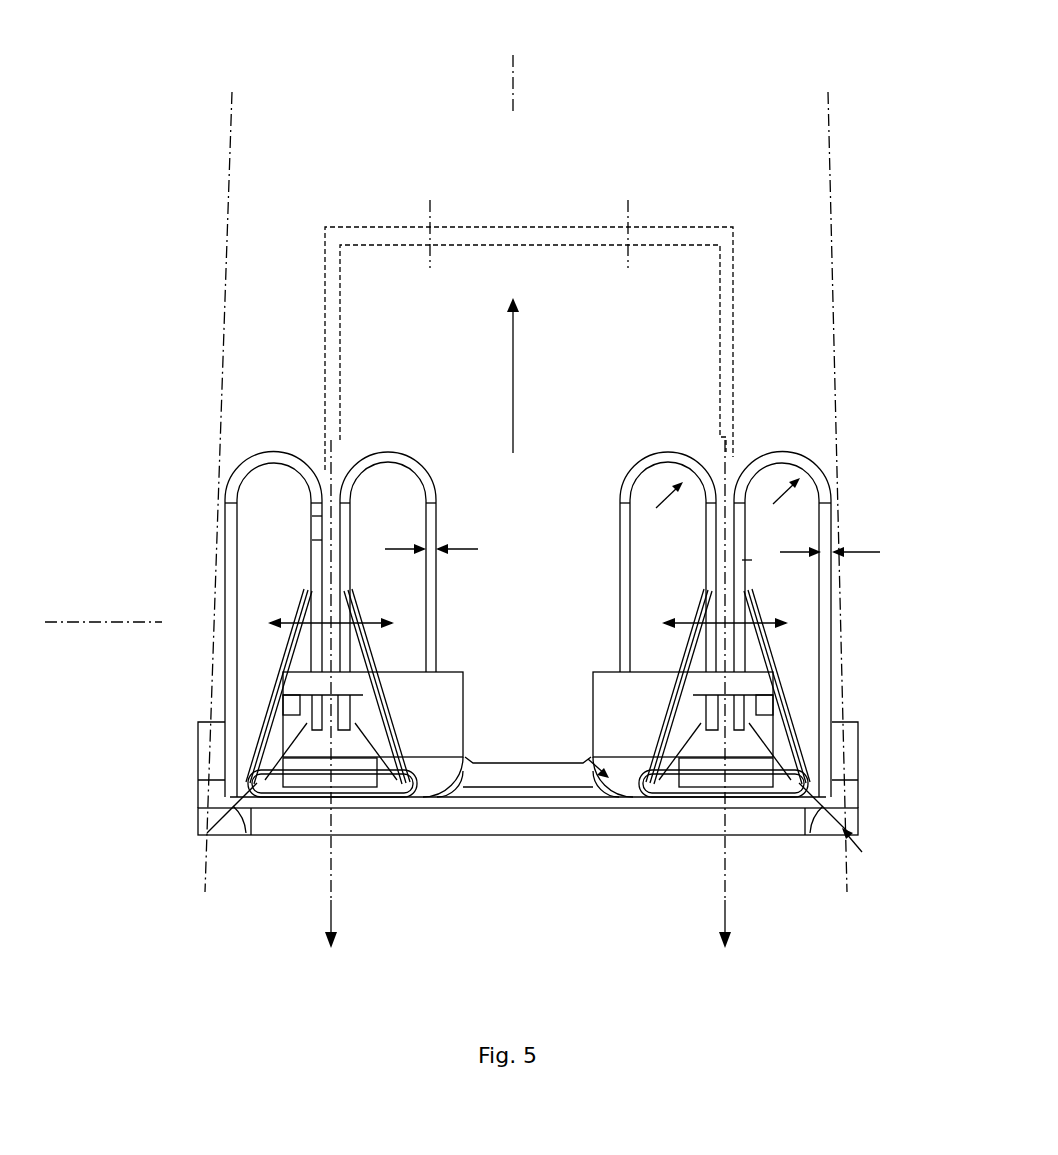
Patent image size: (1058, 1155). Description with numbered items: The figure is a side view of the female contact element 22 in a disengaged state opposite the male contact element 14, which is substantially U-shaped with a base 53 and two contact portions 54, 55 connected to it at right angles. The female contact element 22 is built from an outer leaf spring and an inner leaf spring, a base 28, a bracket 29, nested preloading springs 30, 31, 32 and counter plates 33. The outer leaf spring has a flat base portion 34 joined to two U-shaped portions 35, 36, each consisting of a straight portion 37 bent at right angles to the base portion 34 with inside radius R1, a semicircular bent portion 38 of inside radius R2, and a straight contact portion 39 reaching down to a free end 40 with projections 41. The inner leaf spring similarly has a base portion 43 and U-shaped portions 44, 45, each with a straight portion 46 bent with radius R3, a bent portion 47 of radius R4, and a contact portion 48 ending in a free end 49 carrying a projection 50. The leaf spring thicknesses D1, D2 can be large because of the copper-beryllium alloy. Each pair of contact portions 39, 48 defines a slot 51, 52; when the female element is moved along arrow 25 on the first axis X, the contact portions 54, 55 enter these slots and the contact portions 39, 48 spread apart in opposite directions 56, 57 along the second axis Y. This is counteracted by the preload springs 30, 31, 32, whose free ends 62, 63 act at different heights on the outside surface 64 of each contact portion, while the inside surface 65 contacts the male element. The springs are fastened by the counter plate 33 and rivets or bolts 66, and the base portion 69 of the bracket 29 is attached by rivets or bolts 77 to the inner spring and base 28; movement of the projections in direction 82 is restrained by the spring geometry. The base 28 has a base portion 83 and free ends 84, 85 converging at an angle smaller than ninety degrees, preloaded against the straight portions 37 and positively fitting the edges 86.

The male contact element 14 is at (283, 172).
The female contact element 22 is at (178, 410).
The arrow 25 is at (513, 380).
The base 28 is at (578, 848).
The bracket 29 is at (496, 752).
The preloading spring 30 is at (232, 834).
The preloading spring 31 is at (233, 790).
The preloading spring 32 is at (226, 722).
The counter plate 33 is at (335, 775).
The base portion 34 is at (628, 802).
The U-shaped portion 35 is at (212, 548).
The U-shaped portion 36 is at (846, 610).
The straight portion 37 is at (225, 632).
The bent portion 38 is at (280, 452).
The contact portion 39 is at (322, 540).
The free end 40 is at (283, 690).
The projection 41 is at (312, 792).
The base portion 43 is at (498, 790).
The U-shaped portion 44 is at (413, 450).
The U-shaped portion 45 is at (642, 452).
The straight portion 46 is at (436, 600).
The bent portion 47 is at (336, 450).
The contact portion 48 is at (350, 546).
The free end 49 is at (363, 695).
The projection 50 is at (342, 780).
The slot 51 is at (298, 432).
The slot 52 is at (735, 455).
The base 53 is at (520, 227).
The contact portion 54 is at (325, 290).
The contact portion 55 is at (735, 255).
The direction 56 is at (272, 622).
The direction 57 is at (392, 622).
The free end 62 is at (315, 612).
The free end 63 is at (348, 612).
The outside surface 64 is at (322, 516).
The inside surface 65 is at (331, 478).
The rivets or bolts 66 is at (331, 870).
The base portion 69 is at (532, 805).
The rivets or bolts 77 is at (533, 747).
The direction 82 is at (334, 898).
The base portion 83 is at (624, 808).
The free end 84 is at (212, 750).
The free end 85 is at (858, 750).
The edge 86 is at (236, 800).
The first axis X is at (513, 84).
The second axis Y is at (72, 622).
The thickness D1 is at (446, 550).
The thickness D2 is at (844, 552).
The inside radius R1 is at (862, 850).
The inside radius R2 is at (786, 495).
The inside radius R3 is at (580, 758).
The inside radius R4 is at (669, 497).